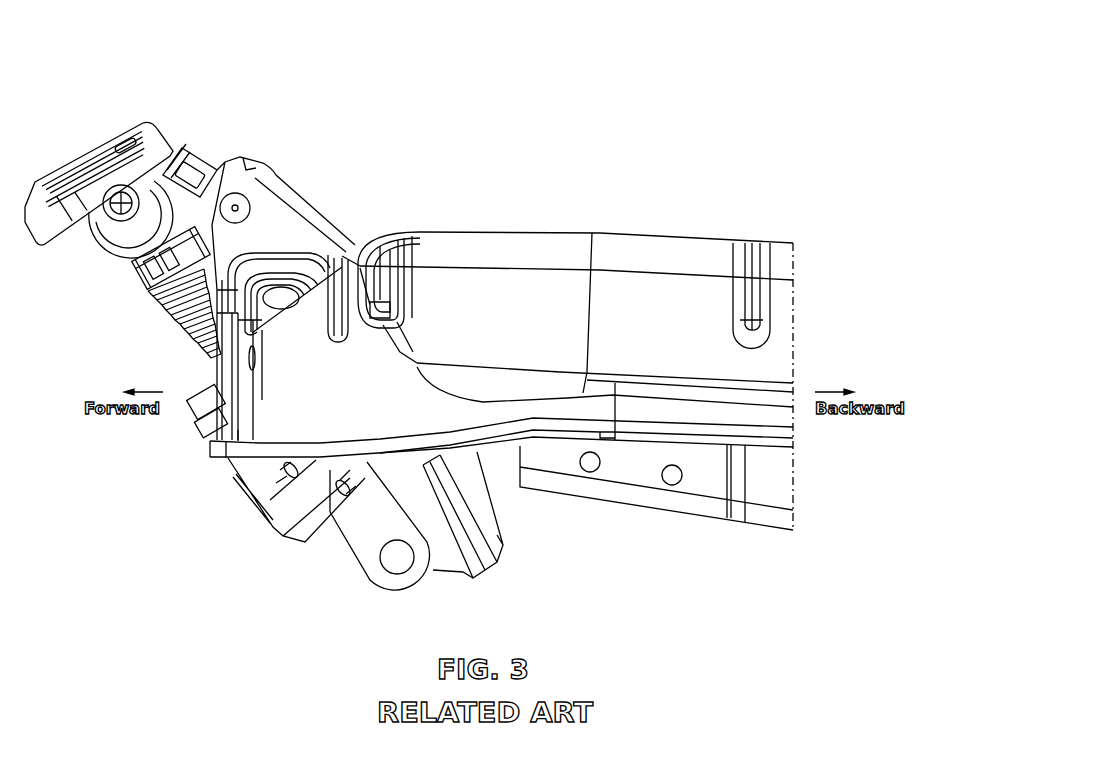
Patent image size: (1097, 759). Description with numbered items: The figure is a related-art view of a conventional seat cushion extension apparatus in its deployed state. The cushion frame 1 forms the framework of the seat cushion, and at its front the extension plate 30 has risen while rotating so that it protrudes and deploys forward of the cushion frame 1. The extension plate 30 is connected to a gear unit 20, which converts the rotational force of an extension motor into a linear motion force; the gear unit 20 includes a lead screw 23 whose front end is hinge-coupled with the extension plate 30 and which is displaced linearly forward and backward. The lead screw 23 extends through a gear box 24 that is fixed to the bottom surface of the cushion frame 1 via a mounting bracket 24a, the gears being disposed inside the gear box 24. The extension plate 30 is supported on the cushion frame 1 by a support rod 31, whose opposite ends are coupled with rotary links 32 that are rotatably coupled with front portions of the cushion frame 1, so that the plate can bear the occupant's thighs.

The cushion frame 1 is at (494, 243).
The gear unit 20 is at (225, 484).
The lead screw 23 is at (180, 320).
The gear box 24 is at (255, 478).
The mounting bracket 24a is at (510, 570).
The extension plate 30 is at (76, 152).
The support rod 31 is at (181, 150).
The rotary links 32 is at (211, 157).